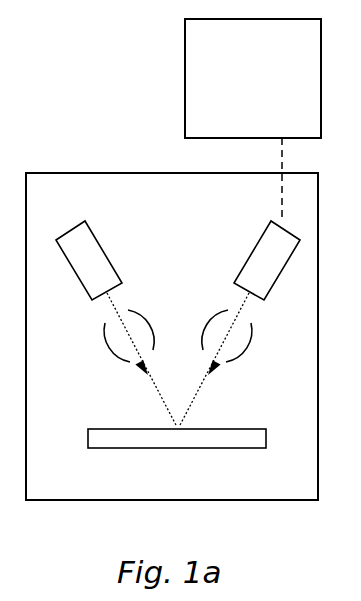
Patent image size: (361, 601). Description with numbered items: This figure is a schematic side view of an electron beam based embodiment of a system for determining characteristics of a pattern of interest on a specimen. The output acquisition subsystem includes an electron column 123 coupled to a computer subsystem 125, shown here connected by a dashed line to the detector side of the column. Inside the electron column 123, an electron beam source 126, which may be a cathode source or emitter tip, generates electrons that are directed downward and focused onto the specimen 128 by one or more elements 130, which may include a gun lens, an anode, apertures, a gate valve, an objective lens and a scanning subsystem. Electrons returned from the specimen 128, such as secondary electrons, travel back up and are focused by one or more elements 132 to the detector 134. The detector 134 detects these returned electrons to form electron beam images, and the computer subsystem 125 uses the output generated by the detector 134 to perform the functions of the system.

The electron column 123 is at (160, 173).
The computer subsystem 125 is at (233, 118).
The electron beam source 126 is at (93, 234).
The specimen 128 is at (222, 429).
The one or more elements 130 is at (115, 354).
The one or more elements 132 is at (241, 354).
The detector 134 is at (263, 236).